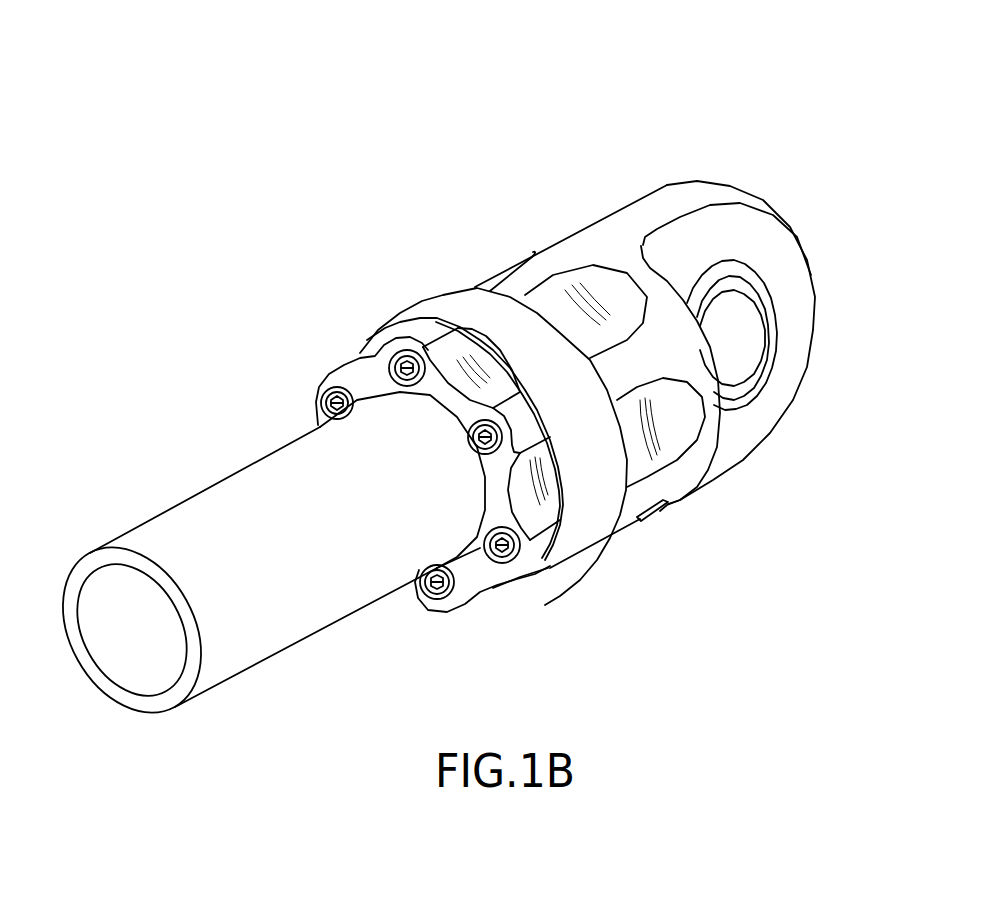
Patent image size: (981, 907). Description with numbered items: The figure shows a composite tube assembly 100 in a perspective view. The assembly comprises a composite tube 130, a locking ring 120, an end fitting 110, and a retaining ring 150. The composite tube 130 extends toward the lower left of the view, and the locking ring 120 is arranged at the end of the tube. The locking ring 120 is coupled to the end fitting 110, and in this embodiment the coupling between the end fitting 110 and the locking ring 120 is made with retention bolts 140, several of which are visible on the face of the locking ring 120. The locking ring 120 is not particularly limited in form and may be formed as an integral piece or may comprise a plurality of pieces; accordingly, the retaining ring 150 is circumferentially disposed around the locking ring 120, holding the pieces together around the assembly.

The composite tube assembly 100 is at (636, 101).
The end fitting 110 is at (767, 233).
The locking ring 120 is at (468, 570).
The composite tube 130 is at (115, 658).
The retention bolts 140 is at (390, 362).
The retaining ring 150 is at (452, 305).